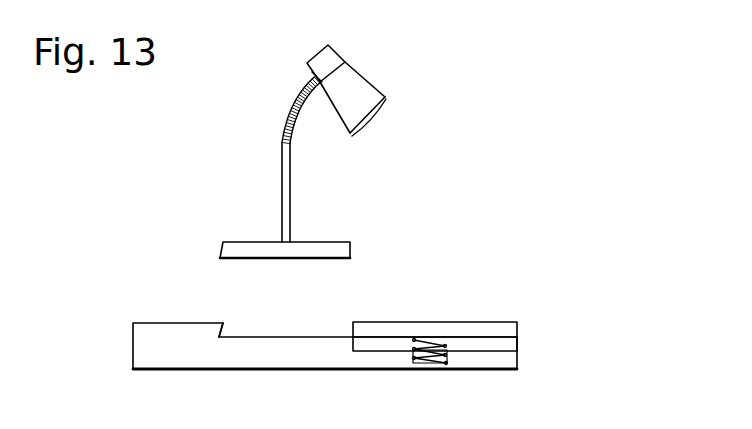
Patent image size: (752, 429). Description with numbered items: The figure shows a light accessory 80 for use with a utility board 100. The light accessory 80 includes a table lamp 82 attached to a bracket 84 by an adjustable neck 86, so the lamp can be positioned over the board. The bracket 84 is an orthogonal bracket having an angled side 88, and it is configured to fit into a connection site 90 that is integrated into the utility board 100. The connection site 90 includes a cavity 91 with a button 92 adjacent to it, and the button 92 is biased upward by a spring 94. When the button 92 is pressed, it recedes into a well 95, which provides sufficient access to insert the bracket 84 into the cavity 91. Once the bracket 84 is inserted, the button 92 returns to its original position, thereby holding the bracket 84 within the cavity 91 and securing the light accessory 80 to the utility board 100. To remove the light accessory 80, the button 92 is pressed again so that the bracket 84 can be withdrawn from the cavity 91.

The light accessory 80 is at (188, 193).
The table lamp 82 is at (352, 95).
The bracket 84 is at (325, 247).
The adjustable neck 86 is at (282, 142).
The angled side 88 is at (222, 247).
The connection site 90 is at (572, 308).
The cavity 91 is at (256, 326).
The button 92 is at (468, 323).
The spring 94 is at (447, 356).
The well 95 is at (512, 345).
The utility board 100 is at (145, 351).